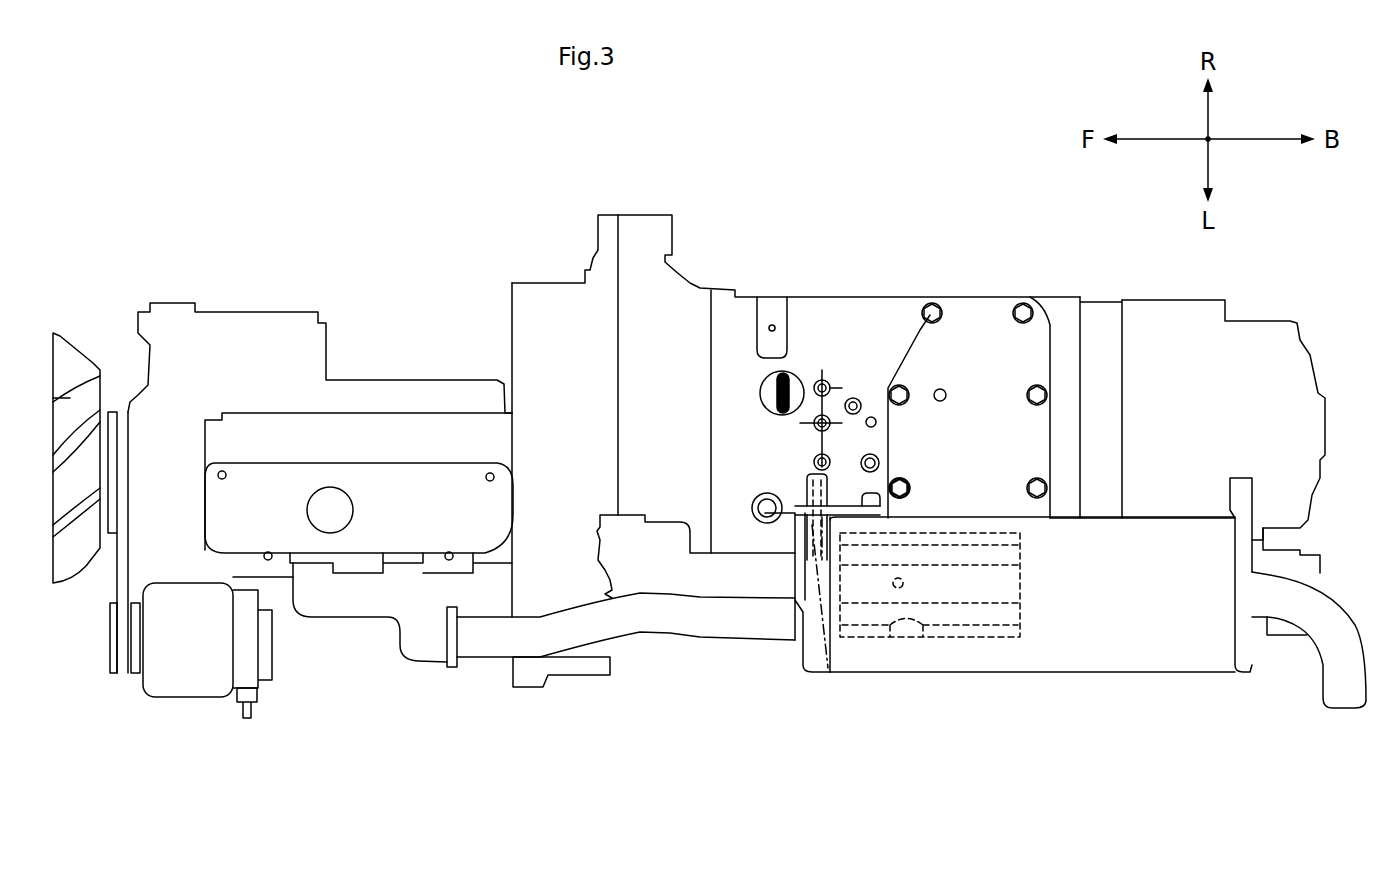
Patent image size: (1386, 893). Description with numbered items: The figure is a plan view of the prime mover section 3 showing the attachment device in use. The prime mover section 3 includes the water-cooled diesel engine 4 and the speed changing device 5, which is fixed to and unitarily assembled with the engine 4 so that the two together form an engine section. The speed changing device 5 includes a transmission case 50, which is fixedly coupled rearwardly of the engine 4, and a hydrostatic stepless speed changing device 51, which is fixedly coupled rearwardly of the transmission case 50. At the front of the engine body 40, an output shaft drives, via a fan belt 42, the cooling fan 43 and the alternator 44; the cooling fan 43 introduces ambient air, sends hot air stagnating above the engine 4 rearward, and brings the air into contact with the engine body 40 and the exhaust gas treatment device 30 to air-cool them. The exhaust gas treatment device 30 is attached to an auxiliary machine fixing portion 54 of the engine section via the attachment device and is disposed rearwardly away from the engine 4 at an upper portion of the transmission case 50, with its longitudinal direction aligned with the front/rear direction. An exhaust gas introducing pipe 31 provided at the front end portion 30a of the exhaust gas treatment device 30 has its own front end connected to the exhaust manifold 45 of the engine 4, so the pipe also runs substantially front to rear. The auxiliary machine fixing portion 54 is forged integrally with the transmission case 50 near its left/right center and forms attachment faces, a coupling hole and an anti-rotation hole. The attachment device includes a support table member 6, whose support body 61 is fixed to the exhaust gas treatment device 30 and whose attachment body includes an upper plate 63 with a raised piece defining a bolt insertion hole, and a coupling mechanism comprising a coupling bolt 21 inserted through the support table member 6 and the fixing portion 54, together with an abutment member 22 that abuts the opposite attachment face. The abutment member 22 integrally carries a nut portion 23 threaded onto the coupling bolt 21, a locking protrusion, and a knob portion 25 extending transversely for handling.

The prime mover section 3 is at (122, 238).
The water-cooled diesel engine 4 is at (253, 302).
The speed changing device 5 is at (839, 268).
The support table member 6 is at (1020, 617).
The coupling bolt 21 is at (800, 606).
The abutment member 22 is at (835, 505).
The nut portion 23 is at (805, 487).
The knob portion 25 is at (906, 487).
The exhaust gas treatment device 30 is at (1173, 668).
The front end portion 30a is at (808, 668).
The exhaust gas introducing pipe 31 is at (642, 620).
The engine body 40 is at (360, 385).
The fan belt 42 is at (122, 670).
The cooling fan 43 is at (80, 322).
The alternator 44 is at (195, 684).
The exhaust manifold 45 is at (360, 612).
The transmission case 50 is at (882, 298).
The hydrostatic stepless speed changing device 51 is at (1248, 340).
The auxiliary machine fixing portion 54 is at (787, 520).
The support body 61 is at (960, 640).
The upper plate 63 is at (815, 665).